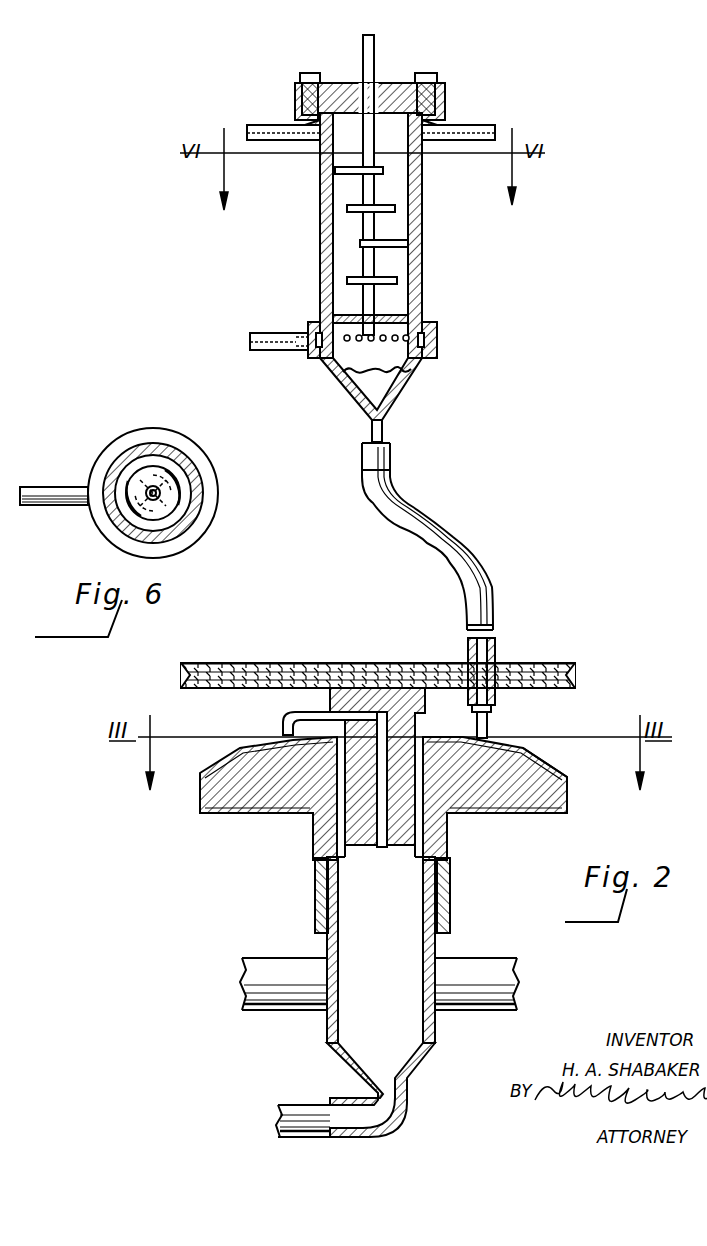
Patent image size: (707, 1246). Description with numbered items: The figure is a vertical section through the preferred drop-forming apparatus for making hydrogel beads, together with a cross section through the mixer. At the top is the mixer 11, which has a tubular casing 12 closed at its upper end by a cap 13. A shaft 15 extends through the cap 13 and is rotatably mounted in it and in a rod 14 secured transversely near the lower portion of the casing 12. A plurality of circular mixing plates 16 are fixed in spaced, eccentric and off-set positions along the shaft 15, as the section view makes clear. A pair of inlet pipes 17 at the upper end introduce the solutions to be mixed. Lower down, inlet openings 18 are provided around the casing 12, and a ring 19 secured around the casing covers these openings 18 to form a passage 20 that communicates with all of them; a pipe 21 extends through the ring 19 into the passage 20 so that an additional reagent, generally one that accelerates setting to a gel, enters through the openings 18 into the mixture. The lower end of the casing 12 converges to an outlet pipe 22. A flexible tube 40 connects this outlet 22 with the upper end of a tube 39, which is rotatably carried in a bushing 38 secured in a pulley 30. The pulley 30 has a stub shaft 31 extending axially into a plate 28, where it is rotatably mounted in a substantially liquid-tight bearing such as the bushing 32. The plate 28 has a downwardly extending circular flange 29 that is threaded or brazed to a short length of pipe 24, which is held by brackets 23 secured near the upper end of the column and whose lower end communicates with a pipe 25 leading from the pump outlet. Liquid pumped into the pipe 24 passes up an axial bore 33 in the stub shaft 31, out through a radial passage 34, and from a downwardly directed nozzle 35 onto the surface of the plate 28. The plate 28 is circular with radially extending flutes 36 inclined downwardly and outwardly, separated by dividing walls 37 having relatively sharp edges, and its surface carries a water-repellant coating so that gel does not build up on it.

In FIG. 2, the mixer 11 is at (422, 242).
In FIG. 6, the tubular casing 12 is at (146, 444).
In FIG. 2, the cap 13 is at (388, 88).
In FIG. 2, the rod 14 is at (402, 314).
In FIG. 2, the shaft 15 is at (369, 32).
In FIG. 2, the circular mixing plates 16 is at (347, 208).
In FIG. 6, the circular mixing plates 16 is at (183, 487).
In FIG. 2, the inlet pipes 17 is at (506, 98).
In FIG. 2, the inlet openings 18 is at (363, 353).
In FIG. 2, the ring 19 is at (432, 356).
In FIG. 6, the ring 19 is at (196, 542).
In FIG. 2, the passage 20 is at (437, 335).
In FIG. 2, the pipe 21 is at (246, 340).
In FIG. 6, the pipe 21 is at (72, 504).
In FIG. 2, the outlet pipe 22 is at (382, 430).
In FIG. 2, the brackets 23 is at (458, 976).
In FIG. 2, the pipe 24 is at (437, 1022).
In FIG. 2, the pipe 25 is at (297, 1110).
In FIG. 2, the plate 28 is at (474, 814).
In FIG. 2, the circular flange 29 is at (451, 888).
In FIG. 2, the pulley 30 is at (262, 645).
In FIG. 2, the stub shaft 31 is at (382, 845).
In FIG. 2, the bushing 32 is at (328, 846).
In FIG. 2, the axial bore 33 is at (386, 849).
In FIG. 2, the radial passage 34 is at (390, 690).
In FIG. 2, the nozzle 35 is at (280, 714).
In FIG. 2, the flutes 36 is at (553, 773).
In FIG. 2, the dividing walls 37 is at (198, 778).
In FIG. 2, the bushing 38 is at (495, 646).
In FIG. 2, the tube 39 is at (485, 732).
In FIG. 2, the flexible tube 40 is at (452, 545).